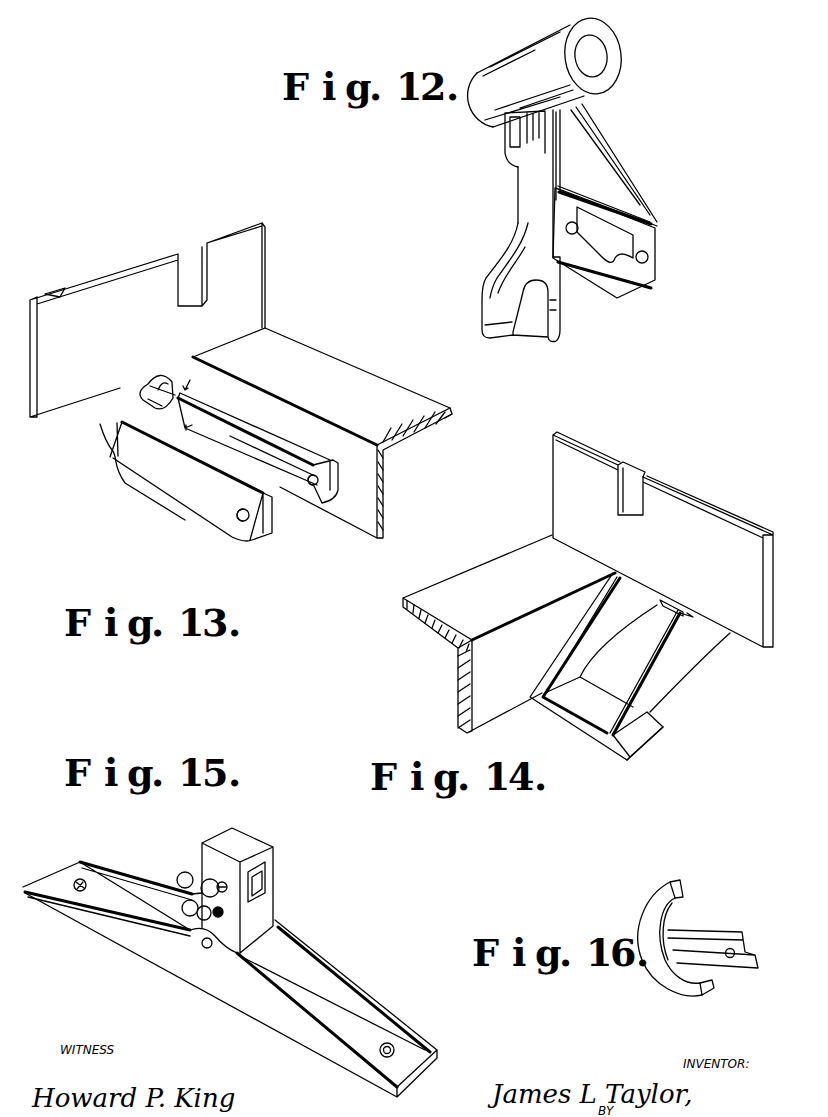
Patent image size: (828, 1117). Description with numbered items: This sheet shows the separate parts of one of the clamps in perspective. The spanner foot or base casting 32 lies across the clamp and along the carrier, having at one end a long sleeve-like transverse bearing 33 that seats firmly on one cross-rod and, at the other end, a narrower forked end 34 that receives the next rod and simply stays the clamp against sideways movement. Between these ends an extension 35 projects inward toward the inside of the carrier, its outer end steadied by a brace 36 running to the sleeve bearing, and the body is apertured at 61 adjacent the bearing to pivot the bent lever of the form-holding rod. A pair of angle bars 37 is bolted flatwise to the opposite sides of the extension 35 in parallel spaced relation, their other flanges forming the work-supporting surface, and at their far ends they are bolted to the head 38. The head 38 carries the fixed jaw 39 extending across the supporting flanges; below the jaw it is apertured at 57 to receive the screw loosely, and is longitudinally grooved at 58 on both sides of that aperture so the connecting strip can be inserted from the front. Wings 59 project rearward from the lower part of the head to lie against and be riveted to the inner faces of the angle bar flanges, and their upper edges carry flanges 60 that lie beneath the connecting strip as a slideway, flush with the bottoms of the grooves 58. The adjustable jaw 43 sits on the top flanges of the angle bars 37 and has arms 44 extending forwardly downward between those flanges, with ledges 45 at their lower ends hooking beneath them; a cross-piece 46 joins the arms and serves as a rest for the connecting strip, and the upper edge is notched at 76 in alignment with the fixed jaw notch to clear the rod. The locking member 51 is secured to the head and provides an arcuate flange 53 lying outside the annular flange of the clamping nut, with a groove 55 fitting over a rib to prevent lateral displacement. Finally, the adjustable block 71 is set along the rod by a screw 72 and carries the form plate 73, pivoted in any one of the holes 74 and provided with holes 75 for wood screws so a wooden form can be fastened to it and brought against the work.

In FIG. 12, the spanner foot or base casting 32 is at (530, 197).
In FIG. 12, the transverse bearing 33 is at (607, 70).
In FIG. 12, the forked end 34 is at (547, 316).
In FIG. 12, the extension 35 is at (653, 280).
In FIG. 12, the brace 36 is at (625, 162).
In FIG. 13, the angle bars 37 is at (410, 400).
In FIG. 14, the angle bars 37 is at (427, 622).
In FIG. 13, the head 38 is at (100, 424).
In FIG. 13, the fixed jaw 39 is at (147, 320).
In FIG. 14, the adjustable jaw 43 is at (715, 520).
In FIG. 14, the arms 44 is at (615, 625).
In FIG. 14, the ledges 45 is at (640, 736).
In FIG. 14, the cross-piece 46 is at (670, 606).
In FIG. 16, the locking member 51 is at (688, 929).
In FIG. 16, the arcuate flange 53 is at (660, 893).
In FIG. 16, the groove 55 is at (712, 952).
In FIG. 13, the aperture 57 is at (150, 384).
In FIG. 13, the grooves 58 is at (187, 388).
In FIG. 13, the wings 59 is at (317, 497).
In FIG. 13, the flanges 60 is at (287, 448).
In FIG. 12, the aperture 61 is at (507, 140).
In FIG. 15, the adjustable block 71 is at (250, 842).
In FIG. 15, the screw 72 is at (205, 882).
In FIG. 15, the plate 73 is at (337, 1010).
In FIG. 15, the holes 74 is at (224, 911).
In FIG. 15, the holes 75 is at (79, 881).
In FIG. 14, the notch or recess 76 is at (645, 500).